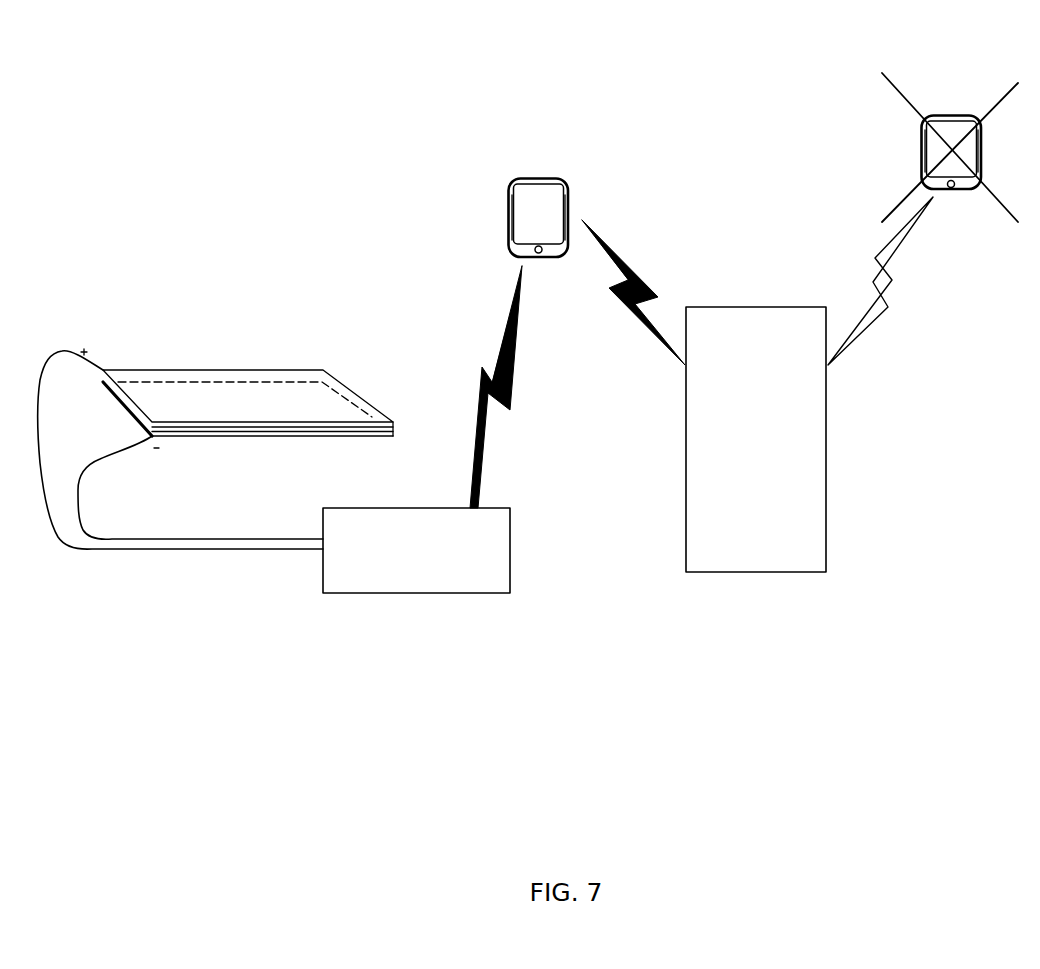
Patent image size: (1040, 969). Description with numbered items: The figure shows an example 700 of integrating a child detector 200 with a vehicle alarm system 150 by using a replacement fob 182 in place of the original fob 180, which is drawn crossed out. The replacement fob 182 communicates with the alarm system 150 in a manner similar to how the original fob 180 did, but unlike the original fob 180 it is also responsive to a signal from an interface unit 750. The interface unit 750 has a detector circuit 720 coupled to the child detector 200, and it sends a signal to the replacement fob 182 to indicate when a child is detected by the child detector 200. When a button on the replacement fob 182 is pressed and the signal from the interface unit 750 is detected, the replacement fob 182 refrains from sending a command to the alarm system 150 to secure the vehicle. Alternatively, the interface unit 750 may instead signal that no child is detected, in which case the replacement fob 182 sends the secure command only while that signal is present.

The example of integrating a child detector with a vehicle alarm system 700 is at (80, 63).
The child detector 200 is at (235, 368).
The detector circuit 720 is at (269, 537).
The interface unit 750 is at (418, 507).
The replacement fob 182 is at (542, 177).
The alarm system 150 is at (773, 307).
The fob 180 is at (951, 113).